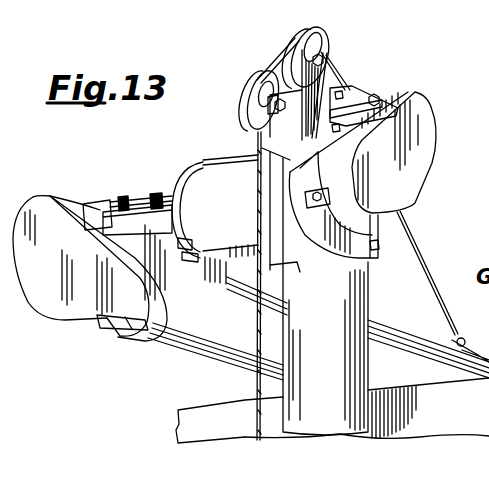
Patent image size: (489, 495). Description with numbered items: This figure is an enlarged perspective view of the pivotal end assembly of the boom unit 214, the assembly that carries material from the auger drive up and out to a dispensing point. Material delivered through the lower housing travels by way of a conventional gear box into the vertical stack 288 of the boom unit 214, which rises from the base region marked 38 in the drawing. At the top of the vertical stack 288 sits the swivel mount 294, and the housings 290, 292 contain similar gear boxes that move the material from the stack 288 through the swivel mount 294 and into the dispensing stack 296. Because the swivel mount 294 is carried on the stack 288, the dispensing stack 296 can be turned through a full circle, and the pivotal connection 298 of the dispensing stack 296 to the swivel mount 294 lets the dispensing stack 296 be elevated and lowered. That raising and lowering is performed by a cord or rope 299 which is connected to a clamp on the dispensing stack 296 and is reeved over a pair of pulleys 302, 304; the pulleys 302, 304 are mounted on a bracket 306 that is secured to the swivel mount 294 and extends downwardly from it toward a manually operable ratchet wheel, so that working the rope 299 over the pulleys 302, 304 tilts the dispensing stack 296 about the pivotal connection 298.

The base slab 38 is at (230, 423).
The boom unit 214 is at (368, 76).
The vertical stack 288 is at (373, 307).
The housing 290 is at (432, 128).
The housing 292 is at (38, 198).
The swivel mount 294 is at (230, 165).
The dispensing stack 296 is at (177, 353).
The pivotal connection 298 is at (177, 160).
The cord or rope 299 is at (420, 248).
The pulley 302 is at (312, 42).
The pulley 304 is at (260, 86).
The bracket 306 is at (283, 128).